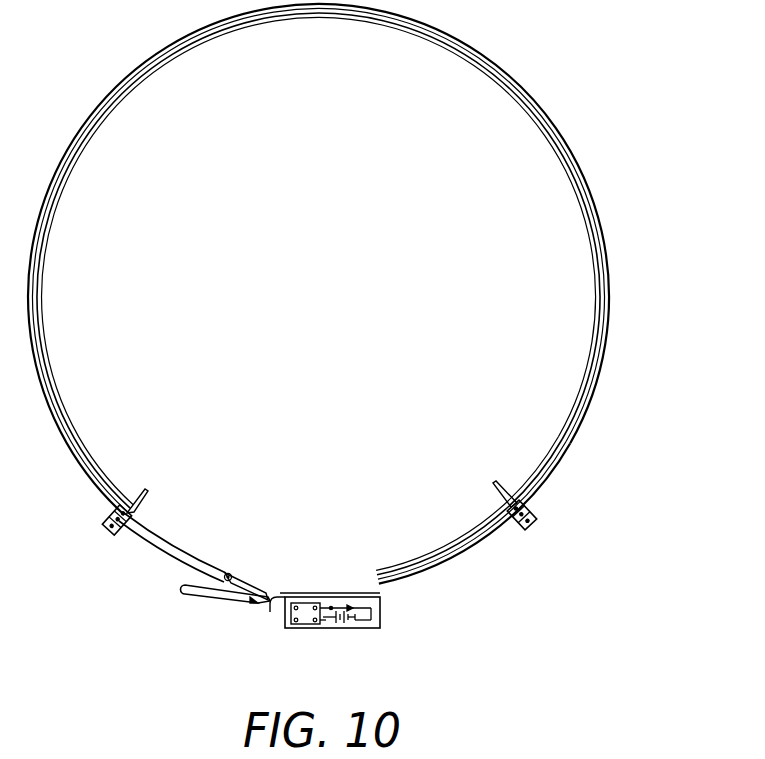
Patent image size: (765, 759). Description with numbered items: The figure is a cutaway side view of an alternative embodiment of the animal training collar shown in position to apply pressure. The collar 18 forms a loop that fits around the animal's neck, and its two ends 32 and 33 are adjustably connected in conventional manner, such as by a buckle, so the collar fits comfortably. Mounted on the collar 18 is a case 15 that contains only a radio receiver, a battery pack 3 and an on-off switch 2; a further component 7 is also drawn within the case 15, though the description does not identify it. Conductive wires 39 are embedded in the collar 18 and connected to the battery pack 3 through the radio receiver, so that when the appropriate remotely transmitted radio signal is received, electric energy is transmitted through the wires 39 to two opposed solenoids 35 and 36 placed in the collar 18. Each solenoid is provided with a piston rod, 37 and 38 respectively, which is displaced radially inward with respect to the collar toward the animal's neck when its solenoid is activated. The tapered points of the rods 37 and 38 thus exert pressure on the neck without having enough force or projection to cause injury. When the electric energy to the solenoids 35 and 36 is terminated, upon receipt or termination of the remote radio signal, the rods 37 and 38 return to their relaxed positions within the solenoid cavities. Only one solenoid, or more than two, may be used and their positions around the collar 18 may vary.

The collar 18 is at (130, 65).
The conductive wires 39 is at (573, 441).
The collar end 32 is at (207, 566).
The collar end 33 is at (205, 602).
The solenoid 35 is at (106, 531).
The piston rod 37 is at (140, 491).
The solenoid 36 is at (538, 522).
The piston rod 38 is at (496, 489).
The battery pack 3 is at (356, 623).
The case 15 is at (325, 597).
The circuit board 7 is at (300, 625).
The on-off switch 2 is at (340, 598).